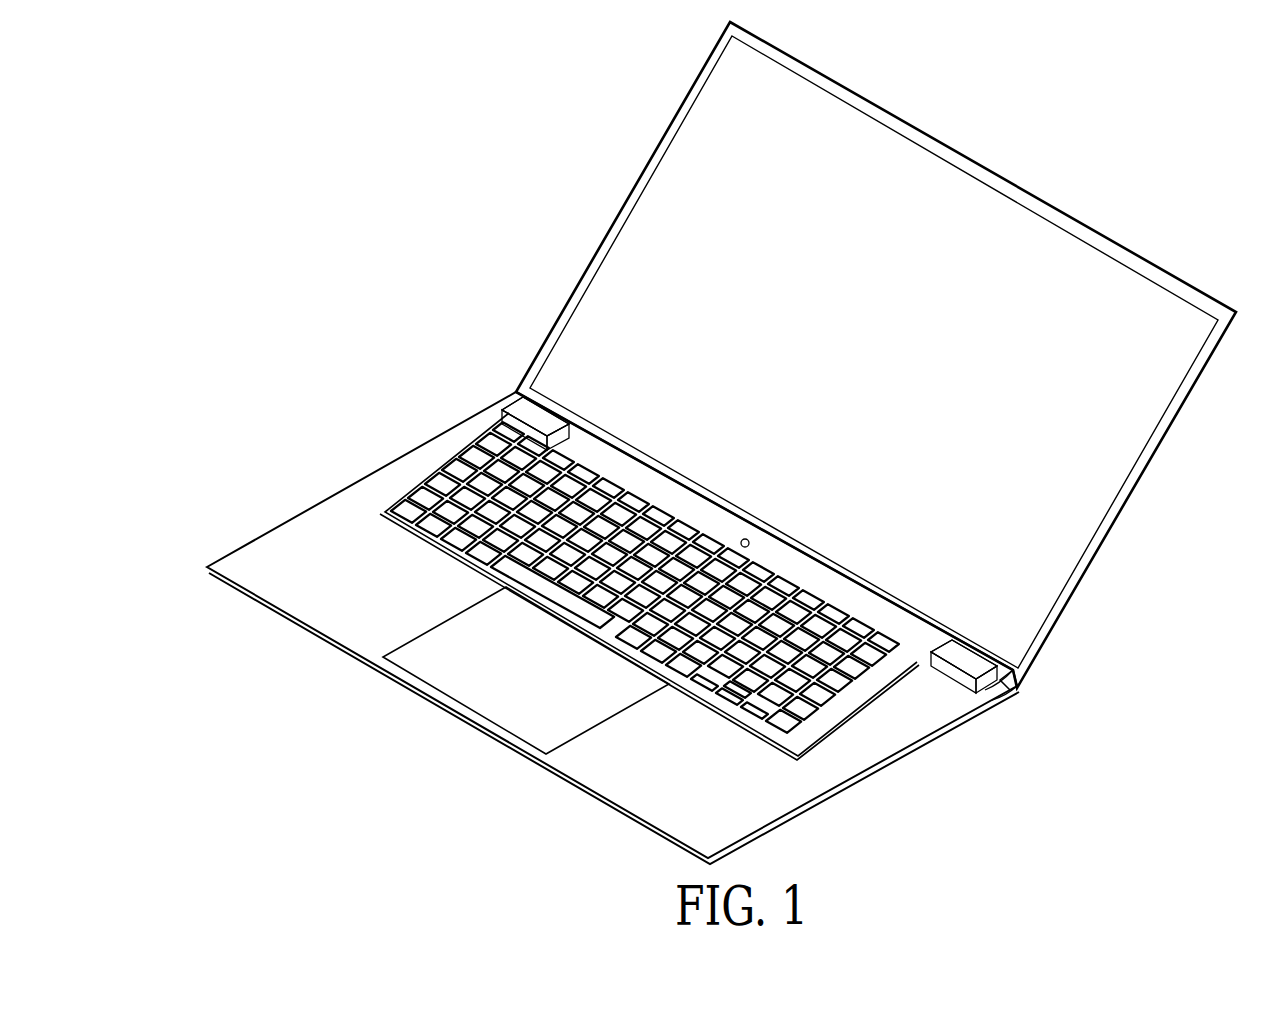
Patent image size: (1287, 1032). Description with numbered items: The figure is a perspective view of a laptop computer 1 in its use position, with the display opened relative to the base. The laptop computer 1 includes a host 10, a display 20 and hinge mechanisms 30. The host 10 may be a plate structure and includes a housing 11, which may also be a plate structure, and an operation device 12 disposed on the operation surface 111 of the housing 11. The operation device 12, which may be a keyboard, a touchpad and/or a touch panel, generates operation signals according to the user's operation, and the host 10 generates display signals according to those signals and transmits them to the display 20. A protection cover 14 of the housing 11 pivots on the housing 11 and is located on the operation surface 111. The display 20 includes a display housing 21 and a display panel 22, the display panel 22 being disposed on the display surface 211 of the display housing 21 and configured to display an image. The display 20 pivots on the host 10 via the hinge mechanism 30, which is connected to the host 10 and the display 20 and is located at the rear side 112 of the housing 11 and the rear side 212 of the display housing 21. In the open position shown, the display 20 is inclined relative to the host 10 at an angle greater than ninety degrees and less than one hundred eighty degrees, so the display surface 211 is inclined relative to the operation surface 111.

The laptop computer 1 is at (153, 76).
The host 10 is at (651, 607).
The housing 11 is at (612, 628).
The operation surface 111 is at (308, 526).
The rear side 112 is at (1010, 690).
The operation device 12 is at (527, 578).
The protection cover 14 is at (512, 398).
The display 20 is at (892, 360).
The display housing 21 is at (876, 360).
The display surface 211 is at (678, 127).
The rear side 212 is at (1113, 695).
The display panel 22 is at (662, 201).
The hinge mechanism 30 is at (567, 401).